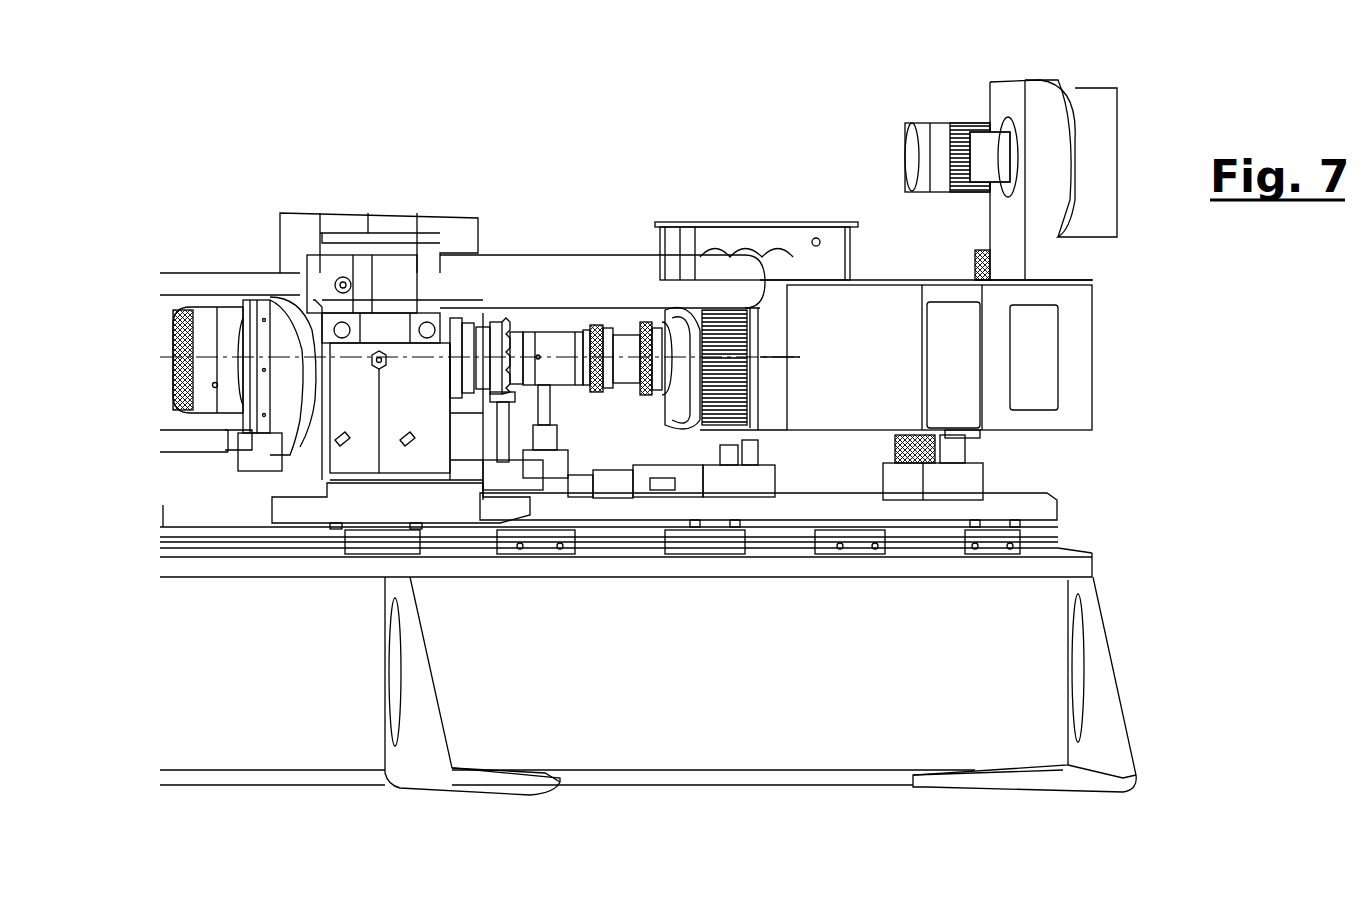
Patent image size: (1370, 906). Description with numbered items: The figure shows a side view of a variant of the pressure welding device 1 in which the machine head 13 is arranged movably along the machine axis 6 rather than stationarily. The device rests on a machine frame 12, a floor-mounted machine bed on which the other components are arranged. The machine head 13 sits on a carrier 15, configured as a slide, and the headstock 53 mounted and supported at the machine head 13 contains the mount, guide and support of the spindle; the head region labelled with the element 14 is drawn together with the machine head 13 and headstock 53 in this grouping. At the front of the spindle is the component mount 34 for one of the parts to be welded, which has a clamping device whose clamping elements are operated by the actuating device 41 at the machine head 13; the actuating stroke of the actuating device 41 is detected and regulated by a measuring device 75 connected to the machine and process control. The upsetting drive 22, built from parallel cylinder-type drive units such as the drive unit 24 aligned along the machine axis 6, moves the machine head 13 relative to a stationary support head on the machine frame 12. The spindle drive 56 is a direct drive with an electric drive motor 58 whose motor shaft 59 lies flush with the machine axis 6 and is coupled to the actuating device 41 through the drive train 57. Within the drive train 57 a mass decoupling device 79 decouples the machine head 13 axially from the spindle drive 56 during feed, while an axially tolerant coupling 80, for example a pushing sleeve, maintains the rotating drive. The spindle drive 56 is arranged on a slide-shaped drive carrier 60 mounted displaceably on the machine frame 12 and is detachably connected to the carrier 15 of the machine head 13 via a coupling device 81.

The pressure welding device 1 is at (763, 178).
The machine axis 6 is at (307, 360).
The machine frame 12 is at (1018, 613).
The machine head 13 is at (358, 309).
The spindle head 14 is at (358, 309).
The headstock 53 is at (342, 227).
The carrier 15 is at (343, 512).
The upsetting drive 22 is at (577, 213).
The drive unit 24 is at (462, 283).
The component mount 34 is at (203, 317).
The actuating device 41 is at (527, 328).
The spindle drive 56 is at (969, 290).
The drive motor 58 is at (1033, 367).
The drive train 57 is at (602, 303).
The motor shaft 59 is at (673, 300).
The drive carrier 60 is at (842, 512).
The measuring device 75 is at (507, 397).
The mass decoupling device 79 is at (671, 554).
The axially tolerant coupling 80 is at (630, 347).
The coupling device 81 is at (613, 490).